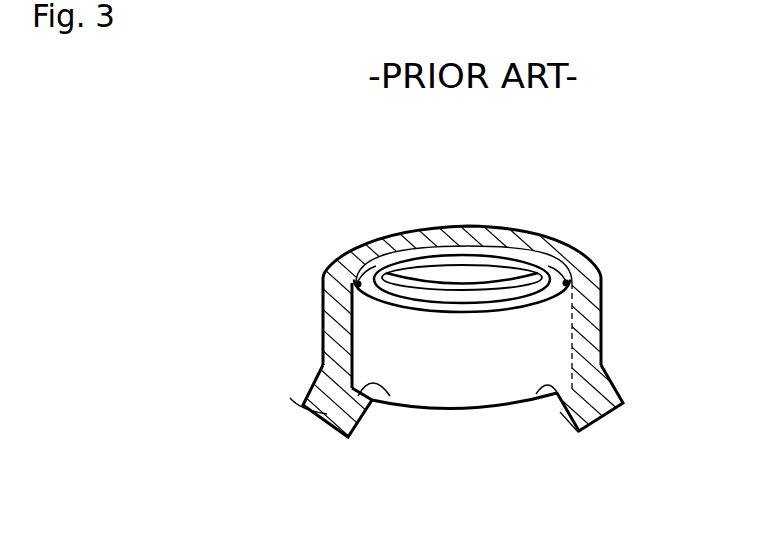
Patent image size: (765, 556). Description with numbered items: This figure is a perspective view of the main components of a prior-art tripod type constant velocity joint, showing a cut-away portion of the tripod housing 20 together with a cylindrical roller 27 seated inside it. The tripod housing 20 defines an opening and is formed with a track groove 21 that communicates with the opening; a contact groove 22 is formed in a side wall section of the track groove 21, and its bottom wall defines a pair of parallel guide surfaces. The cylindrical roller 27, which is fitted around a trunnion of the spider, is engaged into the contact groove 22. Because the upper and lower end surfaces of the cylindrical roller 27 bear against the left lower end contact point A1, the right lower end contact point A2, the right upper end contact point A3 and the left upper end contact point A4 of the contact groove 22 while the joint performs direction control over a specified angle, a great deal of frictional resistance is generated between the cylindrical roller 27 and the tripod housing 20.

The tripod housing 20 is at (590, 325).
The track groove 21 is at (472, 242).
The contact groove 22 is at (354, 302).
The cylindrical roller 27 is at (553, 366).
The left lower end contact point A1 is at (390, 398).
The right lower end contact point A2 is at (532, 400).
The right upper end contact point A3 is at (572, 281).
The left upper end contact point A4 is at (358, 281).